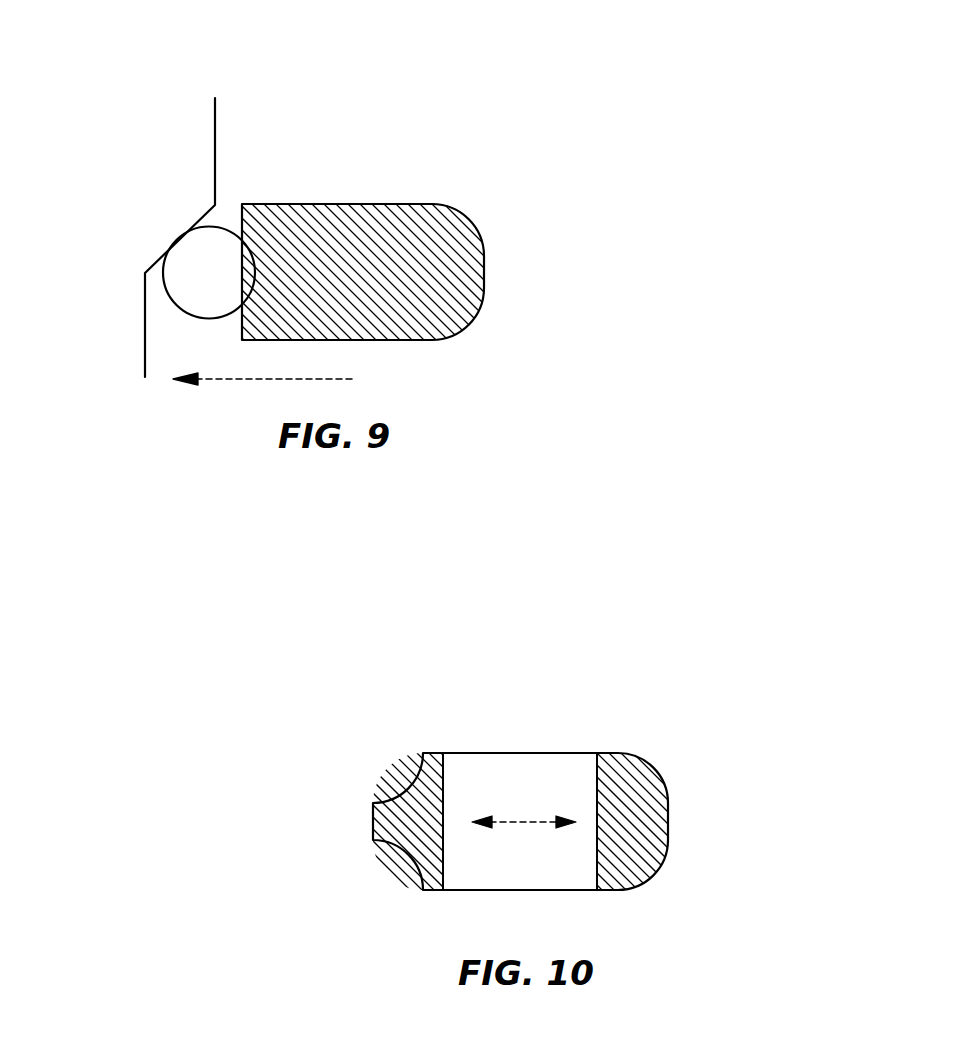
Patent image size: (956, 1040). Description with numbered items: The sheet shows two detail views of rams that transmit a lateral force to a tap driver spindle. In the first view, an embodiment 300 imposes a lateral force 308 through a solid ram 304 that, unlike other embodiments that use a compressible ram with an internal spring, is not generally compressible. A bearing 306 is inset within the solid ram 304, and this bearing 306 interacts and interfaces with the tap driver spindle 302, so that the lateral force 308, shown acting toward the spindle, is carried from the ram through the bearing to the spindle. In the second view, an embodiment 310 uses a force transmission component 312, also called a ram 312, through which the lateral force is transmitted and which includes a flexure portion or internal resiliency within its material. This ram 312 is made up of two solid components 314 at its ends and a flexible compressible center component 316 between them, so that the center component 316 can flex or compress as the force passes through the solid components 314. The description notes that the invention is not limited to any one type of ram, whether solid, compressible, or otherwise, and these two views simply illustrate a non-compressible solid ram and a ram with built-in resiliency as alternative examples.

In FIG. 9, the embodiment 300 is at (430, 126).
In FIG. 9, the tap driver spindle 302 is at (216, 140).
In FIG. 9, the solid ram 304 is at (402, 203).
In FIG. 9, the bearing 306 is at (232, 289).
In FIG. 9, the lateral force 308 is at (248, 382).
In FIG. 10, the embodiment 310 is at (650, 712).
In FIG. 10, the force transmission component 312 is at (568, 752).
In FIG. 10, the solid components 314 is at (410, 847).
In FIG. 10, the flexible compressible center component 316 is at (524, 822).